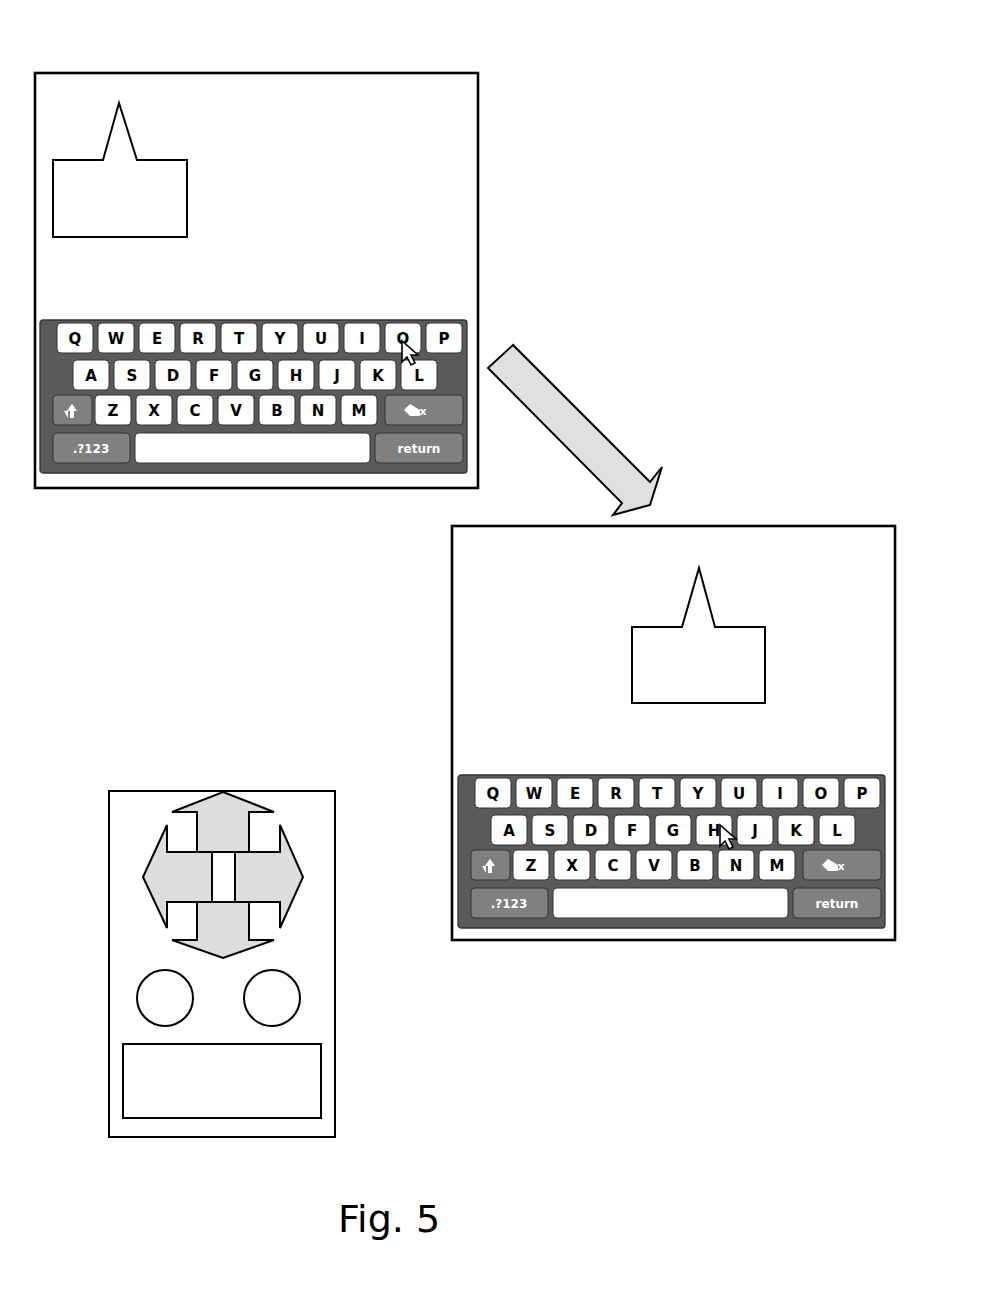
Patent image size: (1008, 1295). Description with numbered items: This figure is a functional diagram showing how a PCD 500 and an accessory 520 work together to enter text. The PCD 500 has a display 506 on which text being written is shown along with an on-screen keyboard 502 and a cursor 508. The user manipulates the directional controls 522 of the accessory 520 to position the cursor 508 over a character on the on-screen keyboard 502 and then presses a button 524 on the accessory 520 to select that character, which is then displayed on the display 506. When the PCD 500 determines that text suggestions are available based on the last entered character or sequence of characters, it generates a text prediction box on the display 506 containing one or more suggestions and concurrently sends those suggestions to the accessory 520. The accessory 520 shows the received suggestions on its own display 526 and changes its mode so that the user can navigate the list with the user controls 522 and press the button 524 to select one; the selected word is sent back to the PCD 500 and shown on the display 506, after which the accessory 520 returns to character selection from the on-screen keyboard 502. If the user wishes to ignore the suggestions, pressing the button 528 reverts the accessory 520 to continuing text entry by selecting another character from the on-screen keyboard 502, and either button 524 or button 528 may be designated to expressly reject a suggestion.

The PCD 500 is at (243, 57).
The on-screen keyboard 502 is at (322, 442).
The display 506 is at (478, 241).
The cursor 508 is at (425, 357).
The accessory 520 is at (336, 835).
The directional controls 522 is at (163, 852).
The button 524 is at (300, 1000).
The display 526 is at (321, 1092).
The button 528 is at (158, 972).